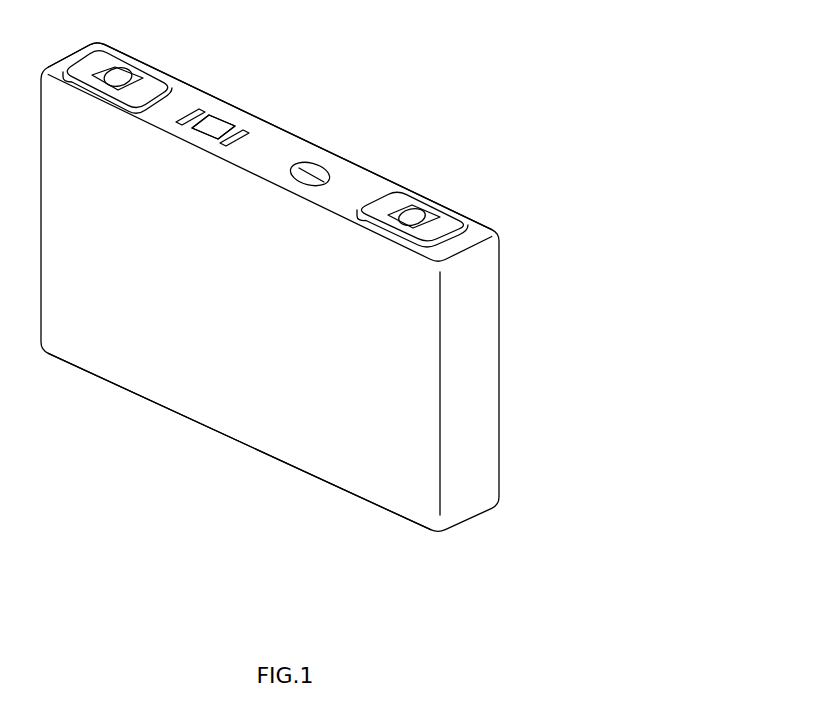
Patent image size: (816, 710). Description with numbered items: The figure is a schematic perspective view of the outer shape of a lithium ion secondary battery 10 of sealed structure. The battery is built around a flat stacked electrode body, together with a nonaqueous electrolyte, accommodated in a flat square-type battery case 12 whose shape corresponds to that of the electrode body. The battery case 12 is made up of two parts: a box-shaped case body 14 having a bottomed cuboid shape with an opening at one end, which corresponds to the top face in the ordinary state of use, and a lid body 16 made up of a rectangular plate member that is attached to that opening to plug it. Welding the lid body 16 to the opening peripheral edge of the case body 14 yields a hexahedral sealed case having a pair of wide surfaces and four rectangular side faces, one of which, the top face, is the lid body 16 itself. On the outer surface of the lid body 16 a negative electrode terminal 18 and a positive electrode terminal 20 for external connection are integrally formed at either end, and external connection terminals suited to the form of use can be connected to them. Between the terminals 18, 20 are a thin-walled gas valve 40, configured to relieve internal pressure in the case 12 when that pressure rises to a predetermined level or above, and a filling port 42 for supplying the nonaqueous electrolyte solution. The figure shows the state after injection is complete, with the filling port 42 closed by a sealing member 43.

The lithium ion secondary battery 10 is at (487, 30).
The battery case 12 is at (294, 408).
The case body 14 is at (187, 397).
The lid body 16 is at (277, 138).
The negative electrode terminal 18 is at (122, 76).
The positive electrode terminal 20 is at (417, 215).
The gas valve 40 is at (325, 170).
The filling port 42 is at (222, 130).
The sealing member 43 is at (217, 127).